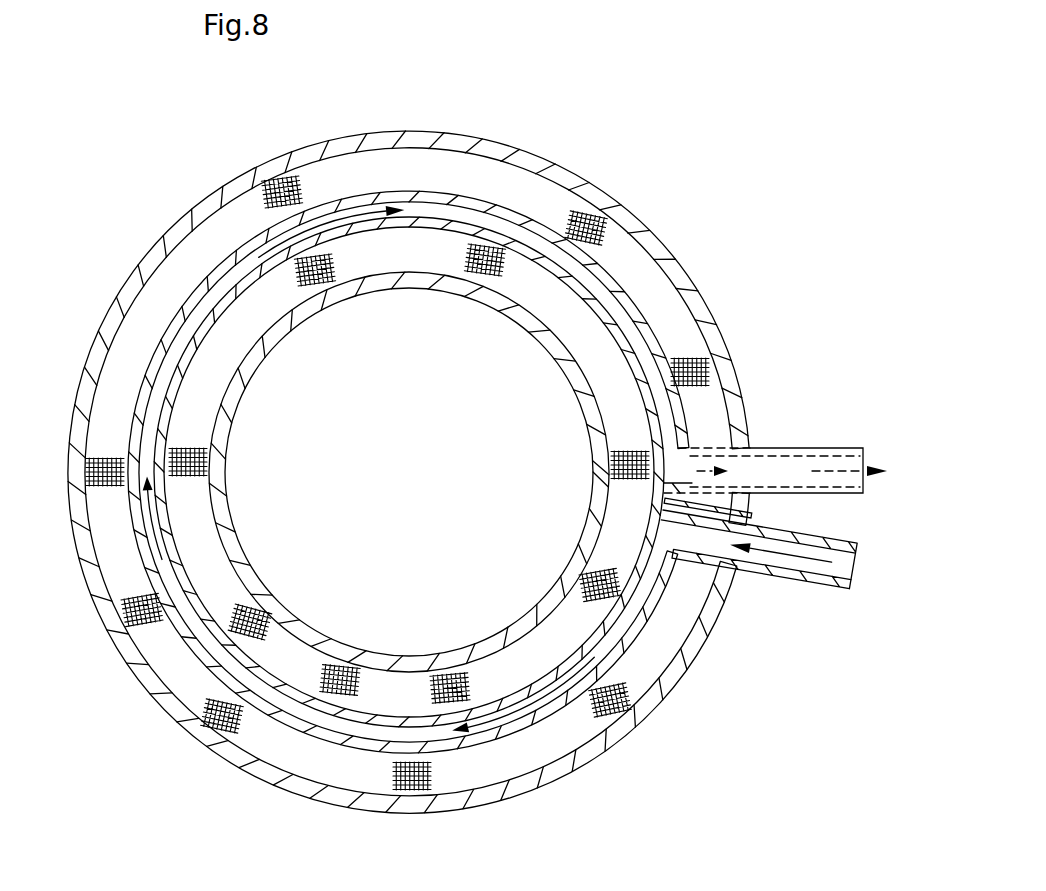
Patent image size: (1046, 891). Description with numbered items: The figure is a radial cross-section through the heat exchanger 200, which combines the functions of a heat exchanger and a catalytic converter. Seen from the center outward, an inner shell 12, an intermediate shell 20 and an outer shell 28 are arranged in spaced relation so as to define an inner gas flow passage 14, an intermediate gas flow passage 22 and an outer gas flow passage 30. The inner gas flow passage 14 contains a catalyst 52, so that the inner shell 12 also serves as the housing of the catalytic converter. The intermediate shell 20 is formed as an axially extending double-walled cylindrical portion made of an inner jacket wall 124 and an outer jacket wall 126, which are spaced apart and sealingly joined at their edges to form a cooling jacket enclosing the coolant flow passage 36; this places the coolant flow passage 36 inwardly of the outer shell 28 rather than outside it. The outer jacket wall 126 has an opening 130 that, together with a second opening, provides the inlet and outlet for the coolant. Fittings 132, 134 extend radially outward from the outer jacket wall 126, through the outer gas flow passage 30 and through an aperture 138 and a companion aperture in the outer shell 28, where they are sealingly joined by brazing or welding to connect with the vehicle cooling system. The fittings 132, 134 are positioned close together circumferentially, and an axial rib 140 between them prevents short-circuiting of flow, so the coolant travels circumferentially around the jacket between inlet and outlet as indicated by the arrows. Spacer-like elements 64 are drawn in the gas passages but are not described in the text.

The heat exchanger 200 is at (638, 188).
The outer shell 28 is at (520, 800).
The outer jacket wall 126 is at (168, 318).
The inner jacket wall 124 is at (167, 422).
The coolant flow passage 36 is at (205, 640).
The inner shell 12 is at (392, 657).
The inner gas flow passage 14 is at (425, 475).
The catalyst 52 is at (478, 340).
The spacer grids 64 is at (375, 243).
The outer gas flow passage 30 is at (245, 735).
The intermediate shell 20 is at (640, 660).
The intermediate gas flow passage 22 is at (367, 703).
The fitting 132 is at (835, 447).
The fitting 134 is at (822, 592).
The opening 130 is at (700, 548).
The aperture 138 is at (745, 585).
The axial rib 140 is at (715, 497).